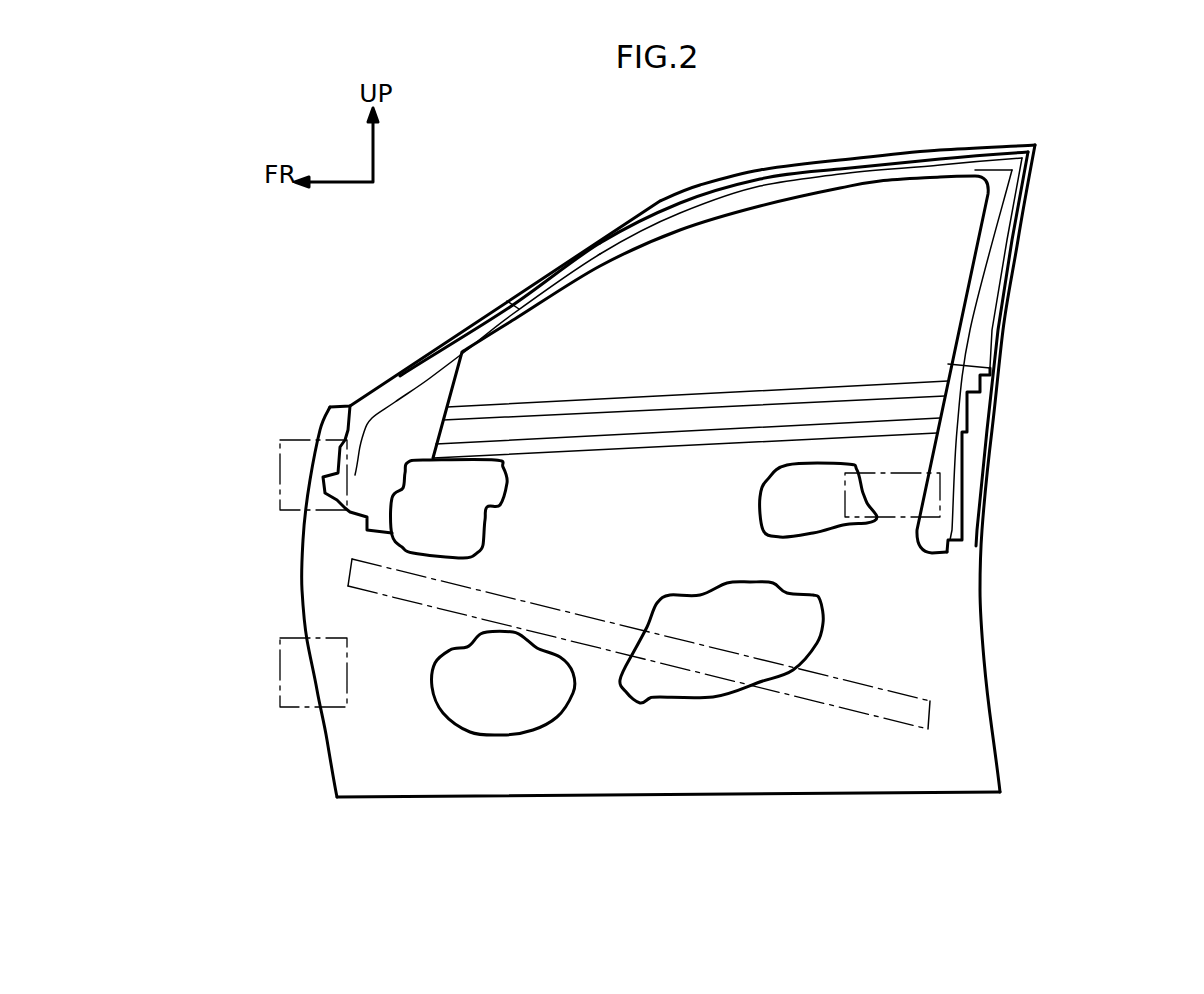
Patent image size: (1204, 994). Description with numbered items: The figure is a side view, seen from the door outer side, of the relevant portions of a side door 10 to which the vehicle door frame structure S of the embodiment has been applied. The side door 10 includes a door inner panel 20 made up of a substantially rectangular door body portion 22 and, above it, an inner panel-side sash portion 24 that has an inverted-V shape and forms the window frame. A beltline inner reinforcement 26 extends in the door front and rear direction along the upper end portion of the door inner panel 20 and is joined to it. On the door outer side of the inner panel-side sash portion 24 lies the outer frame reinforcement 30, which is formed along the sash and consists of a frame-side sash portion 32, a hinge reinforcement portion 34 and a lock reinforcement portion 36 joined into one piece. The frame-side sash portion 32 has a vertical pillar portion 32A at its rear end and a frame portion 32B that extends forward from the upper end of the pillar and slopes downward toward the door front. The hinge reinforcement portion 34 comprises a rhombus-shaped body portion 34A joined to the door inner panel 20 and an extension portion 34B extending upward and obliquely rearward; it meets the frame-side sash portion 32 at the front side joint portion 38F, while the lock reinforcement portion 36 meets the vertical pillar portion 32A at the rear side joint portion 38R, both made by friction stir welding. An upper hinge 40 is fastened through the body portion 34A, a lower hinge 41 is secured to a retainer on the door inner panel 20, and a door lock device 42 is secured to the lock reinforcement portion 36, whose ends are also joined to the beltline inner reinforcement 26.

The side door 10 is at (595, 157).
The vehicle door frame structure S is at (566, 207).
The door inner panel 20 is at (984, 592).
The door body portion 22 is at (960, 658).
The inner panel-side sash portion 24 is at (977, 146).
The beltline inner reinforcement 26 is at (655, 400).
The outer frame reinforcement 30 is at (678, 226).
The frame-side sash portion 32 is at (886, 325).
The vertical pillar portion 32A is at (1005, 261).
The frame portion 32B is at (800, 182).
The hinge reinforcement portion 34 is at (443, 388).
The body portion 34A is at (382, 404).
The extension portion 34B is at (466, 326).
The lock reinforcement portion 36 is at (962, 446).
The front side joint portion 38F is at (516, 300).
The rear side joint portion 38R is at (980, 364).
The hinge 40 is at (280, 479).
The hinge 41 is at (280, 661).
The door lock device 42 is at (885, 522).